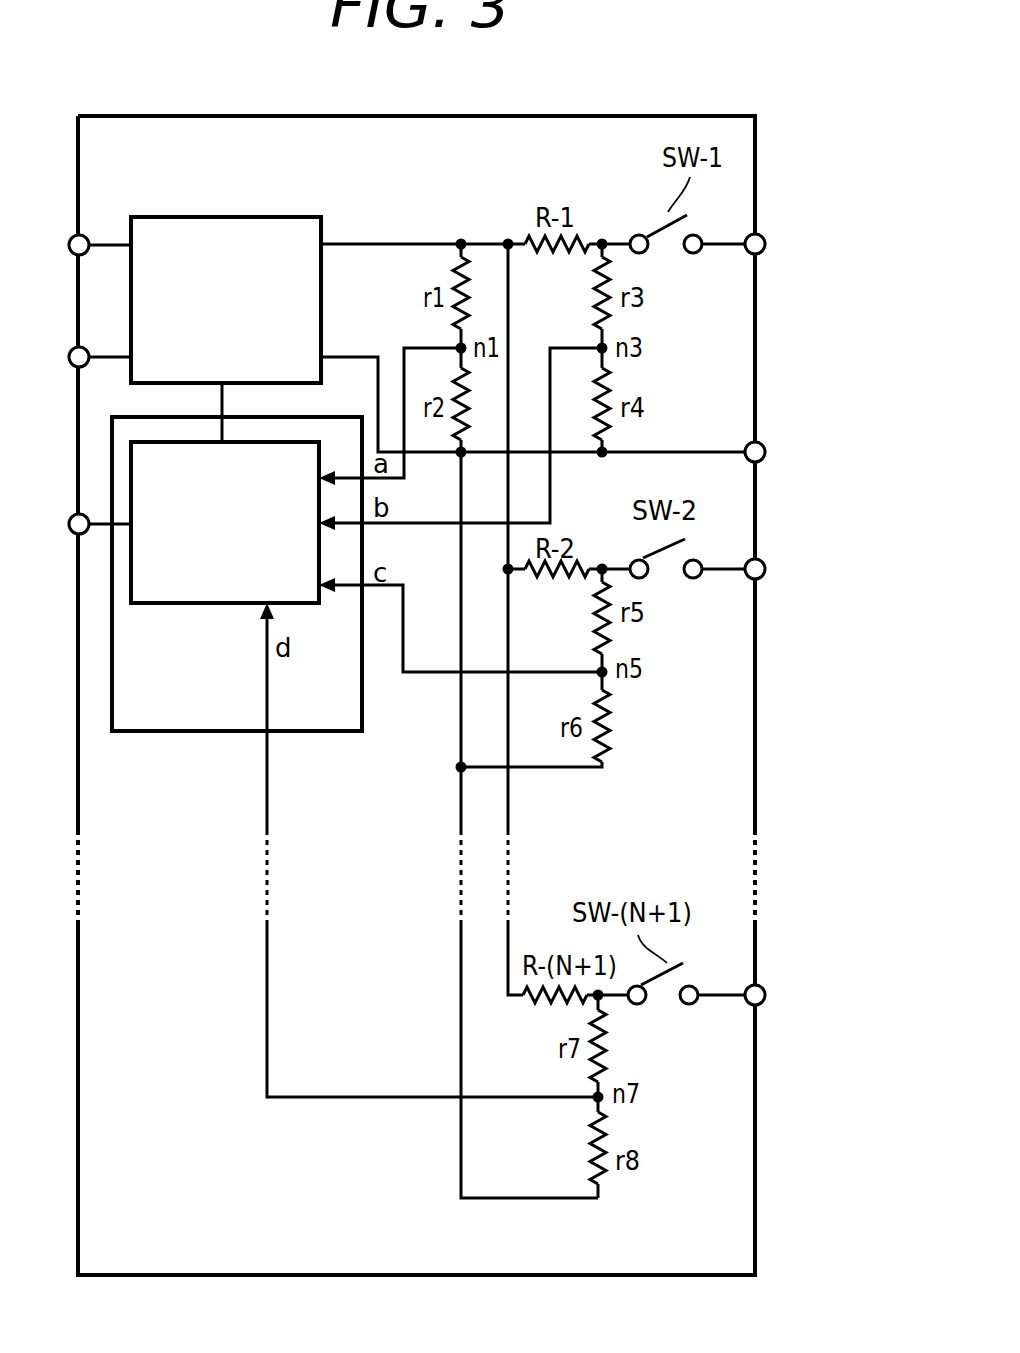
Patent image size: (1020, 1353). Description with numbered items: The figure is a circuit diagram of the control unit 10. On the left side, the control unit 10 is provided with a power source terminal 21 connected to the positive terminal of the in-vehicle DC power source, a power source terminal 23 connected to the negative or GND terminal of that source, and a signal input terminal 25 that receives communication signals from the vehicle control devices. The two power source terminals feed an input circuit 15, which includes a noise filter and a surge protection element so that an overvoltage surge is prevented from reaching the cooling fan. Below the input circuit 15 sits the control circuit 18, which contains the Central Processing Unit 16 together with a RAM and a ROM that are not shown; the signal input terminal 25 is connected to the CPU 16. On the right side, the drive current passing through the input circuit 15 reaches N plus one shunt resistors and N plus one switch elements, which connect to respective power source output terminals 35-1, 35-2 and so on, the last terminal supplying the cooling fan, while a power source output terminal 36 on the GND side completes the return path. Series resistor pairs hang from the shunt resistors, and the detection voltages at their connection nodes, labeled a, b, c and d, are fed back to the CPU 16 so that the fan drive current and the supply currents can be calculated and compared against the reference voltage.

The control unit 10 is at (374, 1277).
The input circuit 15 is at (323, 224).
The Central Processing Unit (CPU) 16 is at (203, 606).
The control circuit 18 is at (203, 733).
The power source terminal 21 is at (71, 253).
The power source terminal 23 is at (71, 365).
The signal input terminal 25 is at (71, 532).
The power source output terminal 35-1 is at (762, 237).
The power source output terminal 35-2 is at (762, 562).
The power source output terminal on GND side 36 is at (762, 445).